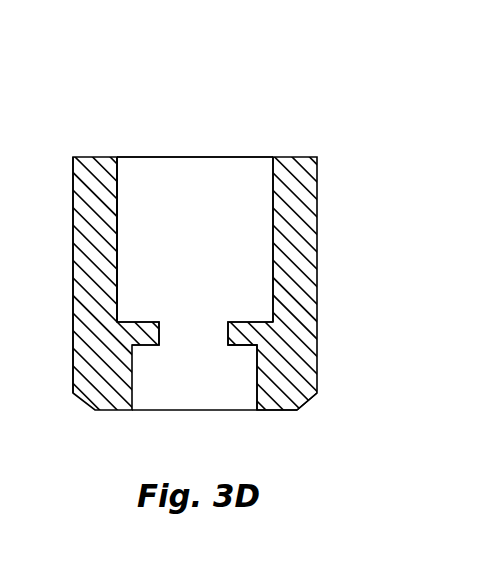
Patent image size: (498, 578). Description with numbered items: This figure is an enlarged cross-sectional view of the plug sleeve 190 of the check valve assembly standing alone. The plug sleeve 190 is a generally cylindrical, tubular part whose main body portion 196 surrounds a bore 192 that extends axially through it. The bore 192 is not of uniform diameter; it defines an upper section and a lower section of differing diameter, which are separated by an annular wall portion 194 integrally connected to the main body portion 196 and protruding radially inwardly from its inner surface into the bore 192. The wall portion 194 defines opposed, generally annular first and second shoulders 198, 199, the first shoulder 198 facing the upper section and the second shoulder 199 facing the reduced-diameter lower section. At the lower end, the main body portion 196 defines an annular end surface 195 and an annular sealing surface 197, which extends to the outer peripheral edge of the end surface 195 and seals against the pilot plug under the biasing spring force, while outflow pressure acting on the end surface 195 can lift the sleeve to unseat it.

The plug sleeve 190 is at (266, 128).
The bore 192 is at (157, 172).
The annular wall portion 194 is at (252, 322).
The annular end surface 195 is at (270, 410).
The main body portion 196 is at (83, 212).
The annular sealing surface 197 is at (300, 401).
The first shoulder 198 is at (143, 320).
The second shoulder 199 is at (234, 345).